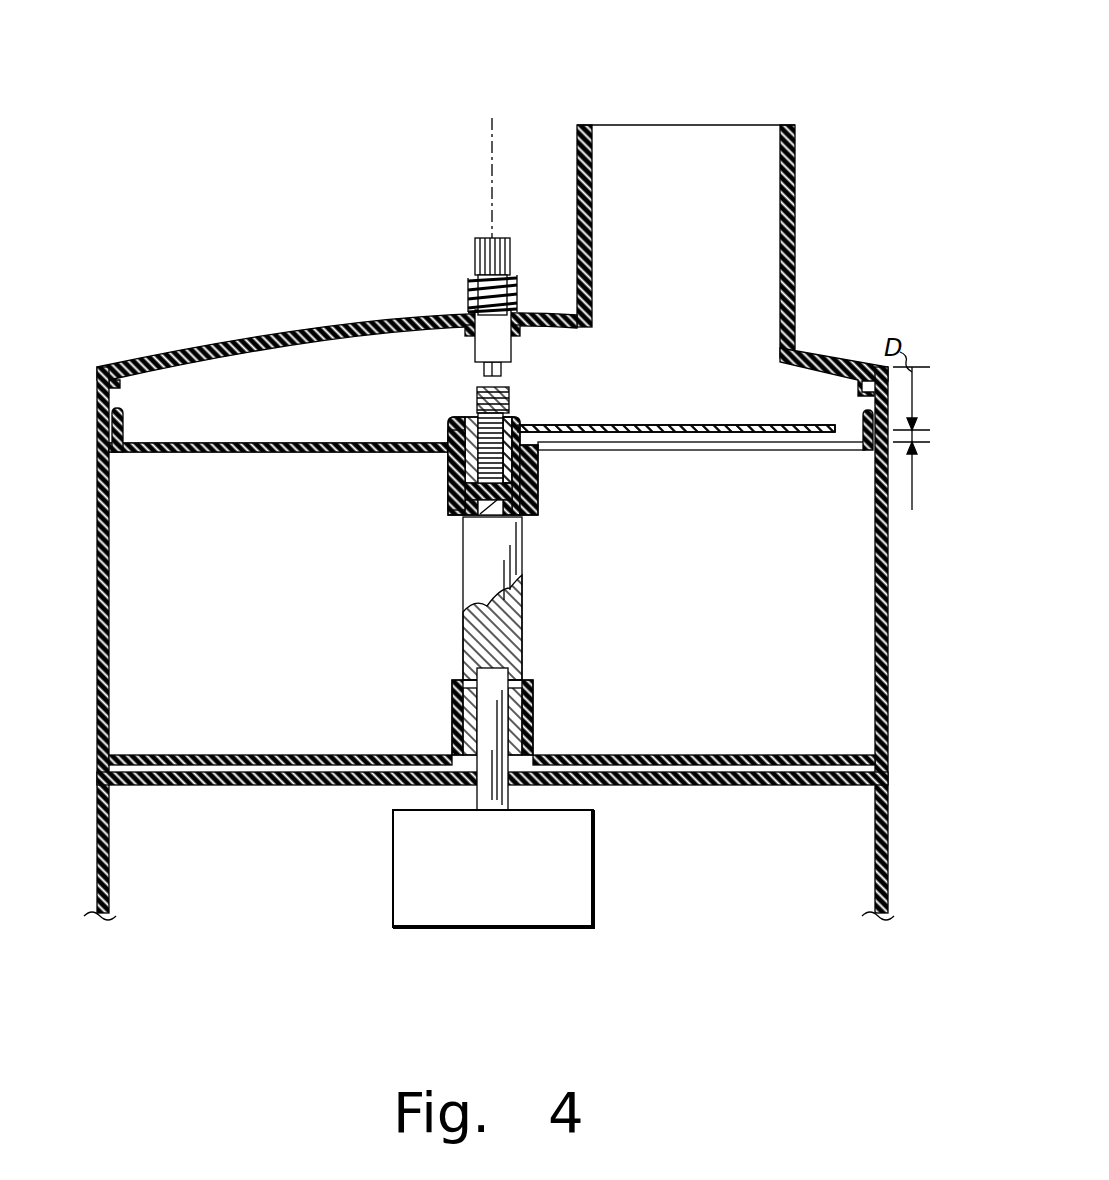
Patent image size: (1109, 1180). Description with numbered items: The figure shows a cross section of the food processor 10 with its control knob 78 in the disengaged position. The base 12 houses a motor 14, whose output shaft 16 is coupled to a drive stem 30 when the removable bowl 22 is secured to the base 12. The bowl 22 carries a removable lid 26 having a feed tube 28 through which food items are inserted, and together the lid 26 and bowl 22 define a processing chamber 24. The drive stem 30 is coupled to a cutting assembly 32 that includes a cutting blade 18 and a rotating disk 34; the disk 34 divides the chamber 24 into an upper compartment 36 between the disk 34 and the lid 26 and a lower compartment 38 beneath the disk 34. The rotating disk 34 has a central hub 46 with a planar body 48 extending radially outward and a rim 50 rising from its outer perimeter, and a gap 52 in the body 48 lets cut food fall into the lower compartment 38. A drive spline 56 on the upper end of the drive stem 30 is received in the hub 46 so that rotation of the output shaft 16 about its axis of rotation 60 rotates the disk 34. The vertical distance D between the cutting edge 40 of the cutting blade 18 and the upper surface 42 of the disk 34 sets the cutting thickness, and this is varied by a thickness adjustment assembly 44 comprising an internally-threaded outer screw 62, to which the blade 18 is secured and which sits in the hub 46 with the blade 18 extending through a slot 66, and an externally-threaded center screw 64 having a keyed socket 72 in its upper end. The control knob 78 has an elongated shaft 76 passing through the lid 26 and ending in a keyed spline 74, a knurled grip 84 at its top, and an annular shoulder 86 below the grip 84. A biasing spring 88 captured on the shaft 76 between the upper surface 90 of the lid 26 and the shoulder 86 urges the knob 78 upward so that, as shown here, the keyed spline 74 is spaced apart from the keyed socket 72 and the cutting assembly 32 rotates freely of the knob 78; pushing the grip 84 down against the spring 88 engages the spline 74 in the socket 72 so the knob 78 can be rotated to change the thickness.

The food processor 10 is at (820, 90).
The base 12 is at (875, 838).
The motor 14 is at (575, 875).
The output shaft 16 is at (496, 700).
The cutting blade 18 is at (672, 424).
The removable bowl 22 is at (110, 630).
The processing chamber 24 is at (716, 635).
The removable lid 26 is at (172, 352).
The feed tube 28 is at (795, 238).
The drive stem 30 is at (522, 558).
The cutting assembly 32 is at (588, 389).
The rotating disk 34 is at (213, 453).
The upper compartment 36 is at (273, 401).
The lower compartment 38 is at (309, 615).
The cutting edge 40 is at (728, 432).
The upper surface 42 is at (786, 450).
The thickness adjustment assembly 44 is at (512, 361).
The central hub 46 is at (495, 458).
The planar body 48 is at (353, 445).
The rim 50 is at (123, 420).
The gap 52 is at (843, 450).
The drive spline 56 is at (488, 519).
The axis of rotation 60 is at (492, 159).
The outer screw 62 is at (450, 465).
The center screw 64 is at (514, 404).
The slot 66 is at (532, 458).
The keyed socket 72 is at (478, 392).
The keyed spline 74 is at (484, 370).
The elongated shaft 76 is at (504, 353).
The control knob 78 is at (490, 216).
The knurled grip 84 is at (478, 257).
The annular shoulder 86 is at (516, 276).
The biasing spring 88 is at (468, 284).
The upper surface 90 is at (466, 310).